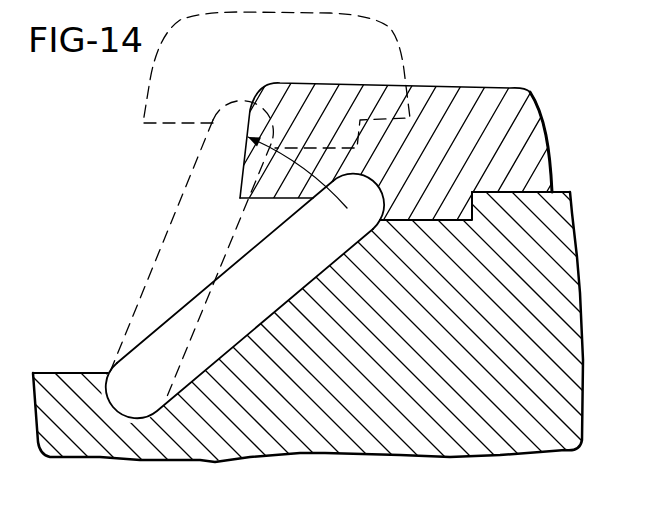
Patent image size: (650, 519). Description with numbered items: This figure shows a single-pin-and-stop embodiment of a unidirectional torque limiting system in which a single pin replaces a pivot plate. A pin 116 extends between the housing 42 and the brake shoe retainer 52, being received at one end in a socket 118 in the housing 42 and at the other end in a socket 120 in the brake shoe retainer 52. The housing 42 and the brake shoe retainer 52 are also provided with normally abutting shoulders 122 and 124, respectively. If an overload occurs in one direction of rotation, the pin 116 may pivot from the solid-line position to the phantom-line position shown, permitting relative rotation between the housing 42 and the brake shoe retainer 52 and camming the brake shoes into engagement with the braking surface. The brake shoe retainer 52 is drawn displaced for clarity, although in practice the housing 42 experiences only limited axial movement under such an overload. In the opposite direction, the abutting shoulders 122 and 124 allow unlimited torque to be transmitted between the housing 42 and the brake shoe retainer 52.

The housing 42 is at (303, 433).
The brake shoe retainer 52 is at (424, 92).
The pin 116 is at (243, 271).
The socket 118 is at (108, 372).
The socket 120 is at (380, 201).
The shoulder 122 is at (475, 208).
The shoulder 124 is at (469, 206).